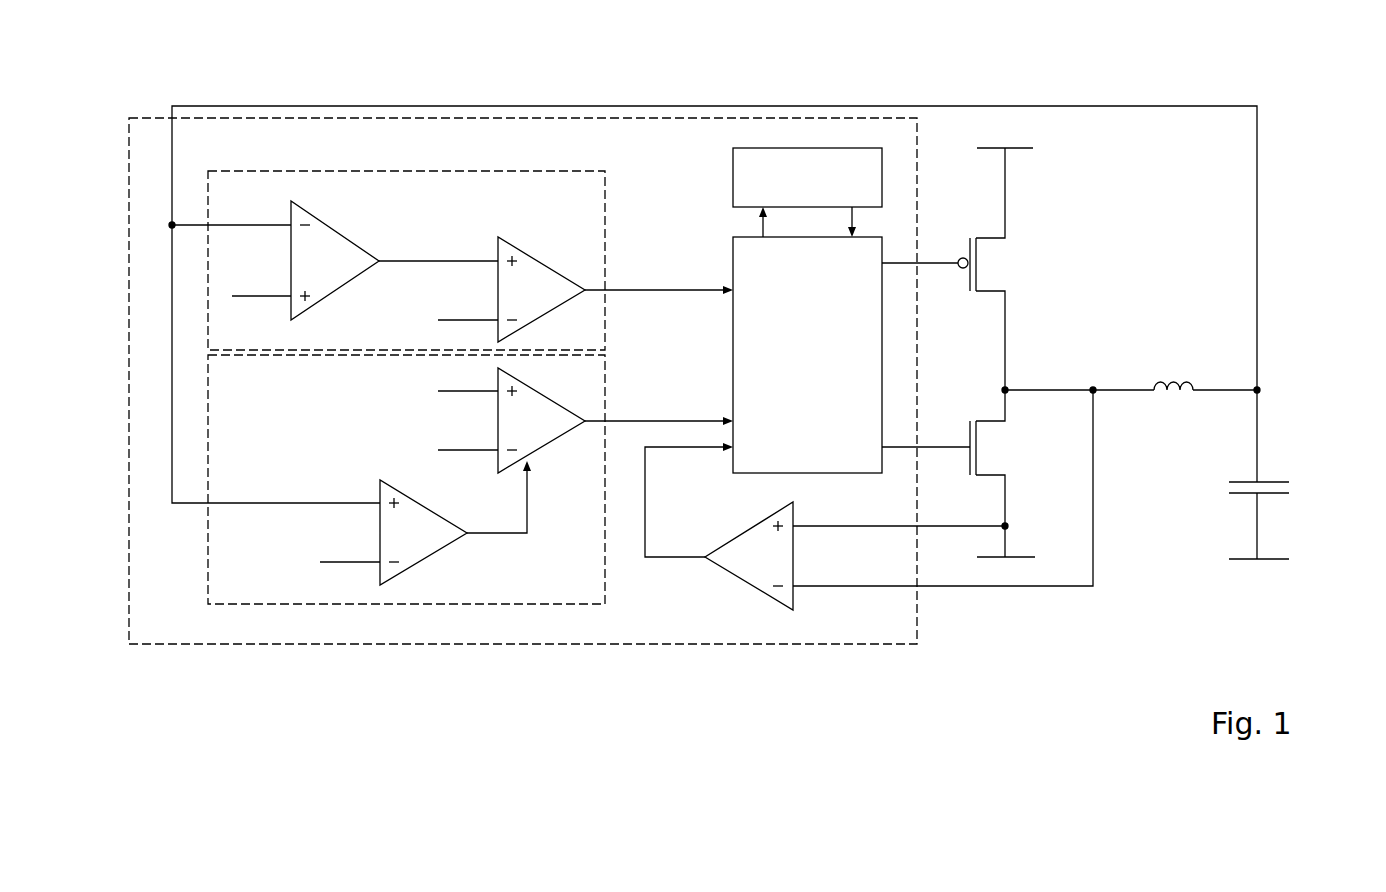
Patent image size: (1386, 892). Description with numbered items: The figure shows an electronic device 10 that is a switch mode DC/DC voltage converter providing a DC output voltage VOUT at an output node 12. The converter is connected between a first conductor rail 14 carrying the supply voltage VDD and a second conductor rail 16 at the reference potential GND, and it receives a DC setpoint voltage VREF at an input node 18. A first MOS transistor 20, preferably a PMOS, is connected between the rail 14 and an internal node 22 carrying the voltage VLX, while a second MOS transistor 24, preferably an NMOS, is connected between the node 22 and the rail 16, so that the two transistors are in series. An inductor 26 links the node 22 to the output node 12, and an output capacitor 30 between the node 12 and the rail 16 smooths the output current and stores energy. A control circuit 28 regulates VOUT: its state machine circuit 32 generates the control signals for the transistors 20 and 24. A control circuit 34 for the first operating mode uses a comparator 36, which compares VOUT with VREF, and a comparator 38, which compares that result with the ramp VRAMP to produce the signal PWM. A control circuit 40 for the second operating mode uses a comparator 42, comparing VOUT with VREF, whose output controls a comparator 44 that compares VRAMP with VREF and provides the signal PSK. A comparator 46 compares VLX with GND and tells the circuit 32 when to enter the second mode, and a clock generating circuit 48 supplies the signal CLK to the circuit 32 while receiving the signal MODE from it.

The electronic device 10 is at (1104, 61).
The output node 12 is at (1260, 388).
The first conductor rail 14 is at (1027, 150).
The second conductor rail 16 is at (1015, 556).
The input node 18 is at (255, 298).
The first MOS transistor 20 is at (988, 236).
The internal node 22 is at (1006, 389).
The second MOS transistor 24 is at (985, 419).
The inductor 26 is at (1186, 384).
The control circuit 28 is at (872, 117).
The output capacitor 30 is at (1270, 482).
The circuit 32 is at (794, 367).
The control circuit for the first operating mode 34 is at (535, 171).
The comparator 36 is at (345, 235).
The comparator 38 is at (540, 276).
The control circuit for the second operating mode 40 is at (575, 605).
The comparator 42 is at (428, 563).
The comparator 44 is at (552, 442).
The comparator 46 is at (767, 598).
The clock signal generating circuit 48 is at (857, 148).